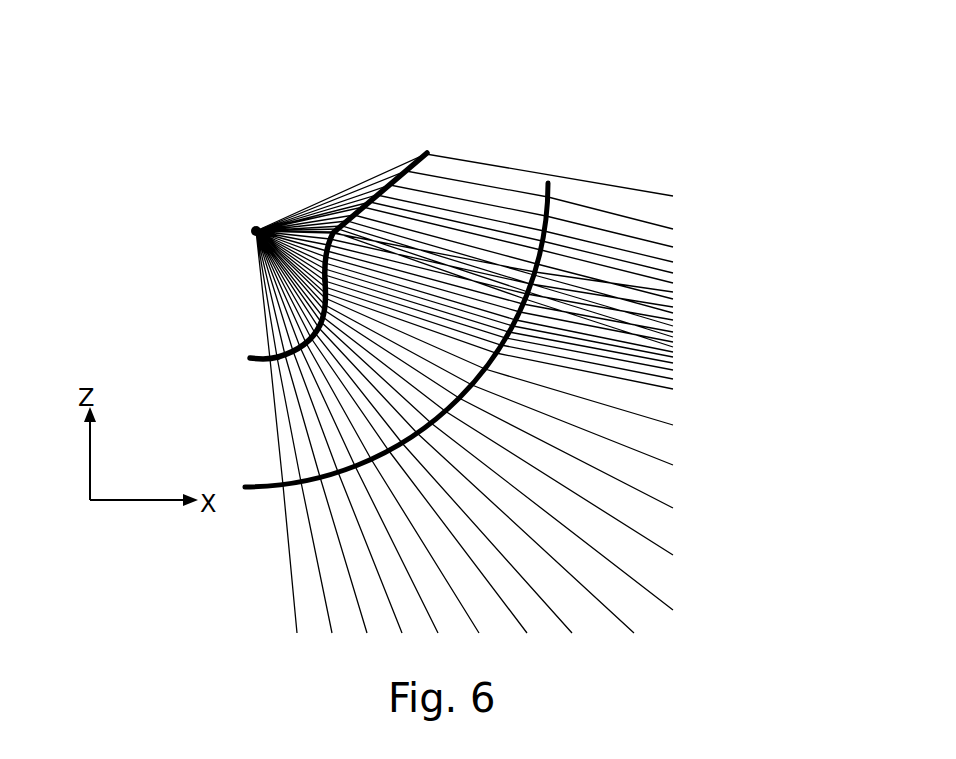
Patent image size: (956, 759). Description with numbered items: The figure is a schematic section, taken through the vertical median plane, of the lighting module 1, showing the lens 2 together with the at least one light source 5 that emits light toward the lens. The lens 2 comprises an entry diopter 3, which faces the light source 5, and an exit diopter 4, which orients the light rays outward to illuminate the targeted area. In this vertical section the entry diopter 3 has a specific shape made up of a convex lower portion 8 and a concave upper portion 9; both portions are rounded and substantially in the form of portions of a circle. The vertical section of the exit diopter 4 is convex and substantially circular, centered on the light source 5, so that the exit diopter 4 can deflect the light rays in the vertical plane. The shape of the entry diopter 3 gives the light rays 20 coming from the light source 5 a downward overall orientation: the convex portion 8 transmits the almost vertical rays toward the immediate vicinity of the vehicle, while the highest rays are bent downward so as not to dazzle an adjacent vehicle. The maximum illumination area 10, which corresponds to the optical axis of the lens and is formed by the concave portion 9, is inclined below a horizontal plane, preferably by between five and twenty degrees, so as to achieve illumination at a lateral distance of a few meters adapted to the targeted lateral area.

The lighting module 1 is at (311, 178).
The lens 2 is at (462, 166).
The entry diopter 3 is at (250, 346).
The exit diopter 4 is at (546, 258).
The light source 5 is at (252, 231).
The convex lower portion 8 is at (311, 322).
The concave upper portion 9 is at (327, 242).
The maximum illumination area 10 is at (687, 195).
The light rays 20 is at (612, 518).